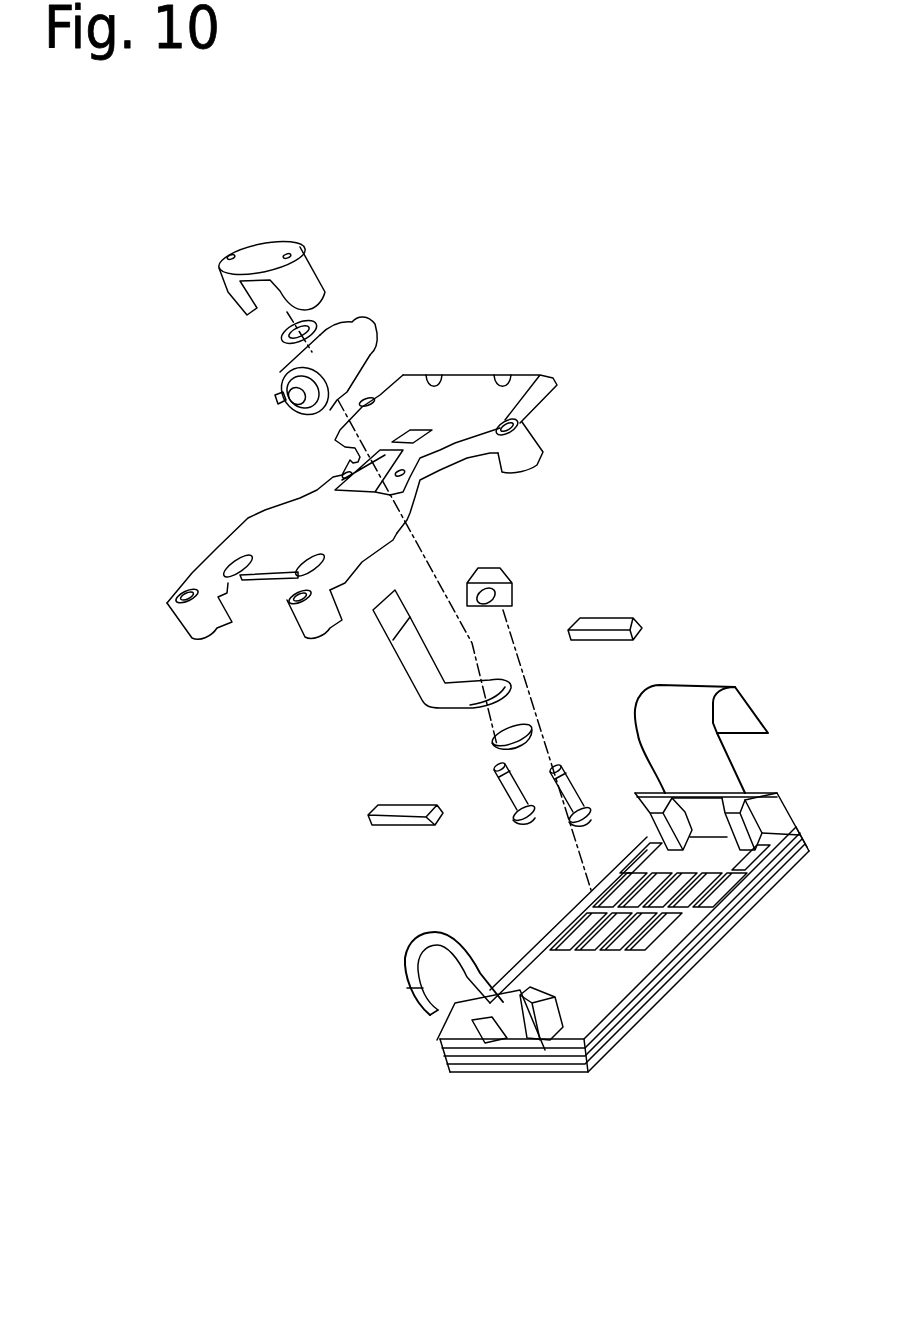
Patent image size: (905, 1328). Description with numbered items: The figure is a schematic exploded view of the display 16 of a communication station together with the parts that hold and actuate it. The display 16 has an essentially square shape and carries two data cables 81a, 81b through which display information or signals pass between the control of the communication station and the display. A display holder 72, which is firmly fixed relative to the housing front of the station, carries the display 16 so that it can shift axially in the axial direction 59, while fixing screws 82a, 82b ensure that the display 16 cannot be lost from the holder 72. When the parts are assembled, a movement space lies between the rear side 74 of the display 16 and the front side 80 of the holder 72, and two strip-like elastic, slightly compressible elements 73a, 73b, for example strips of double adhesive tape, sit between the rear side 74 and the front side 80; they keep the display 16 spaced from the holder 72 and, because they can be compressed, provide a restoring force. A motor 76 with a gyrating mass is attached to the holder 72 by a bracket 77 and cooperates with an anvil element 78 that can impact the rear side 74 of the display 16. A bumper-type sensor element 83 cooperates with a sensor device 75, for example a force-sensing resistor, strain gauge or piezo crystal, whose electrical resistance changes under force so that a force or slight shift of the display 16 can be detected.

The display 16 is at (506, 1118).
The axial direction 59 is at (565, 845).
The display holder 72 is at (475, 383).
The elastic compressible element 73a is at (610, 630).
The elastic compressible element 73b is at (405, 823).
The rear side of the display 74 is at (600, 975).
The sensor device 75 is at (415, 660).
The motor 76 is at (332, 356).
The bracket 77 is at (258, 257).
The anvil element 78 is at (502, 588).
The front side of the holder 80 is at (468, 437).
The data cable 81a is at (408, 968).
The data cable 81b is at (700, 698).
The fixing screw 82a is at (498, 785).
The fixing screw 82b is at (562, 777).
The sensor element 83 is at (527, 722).